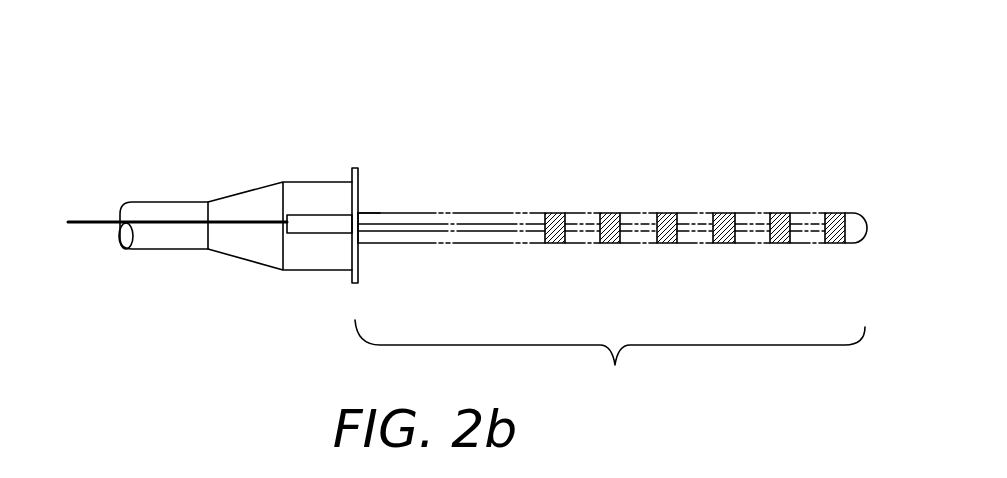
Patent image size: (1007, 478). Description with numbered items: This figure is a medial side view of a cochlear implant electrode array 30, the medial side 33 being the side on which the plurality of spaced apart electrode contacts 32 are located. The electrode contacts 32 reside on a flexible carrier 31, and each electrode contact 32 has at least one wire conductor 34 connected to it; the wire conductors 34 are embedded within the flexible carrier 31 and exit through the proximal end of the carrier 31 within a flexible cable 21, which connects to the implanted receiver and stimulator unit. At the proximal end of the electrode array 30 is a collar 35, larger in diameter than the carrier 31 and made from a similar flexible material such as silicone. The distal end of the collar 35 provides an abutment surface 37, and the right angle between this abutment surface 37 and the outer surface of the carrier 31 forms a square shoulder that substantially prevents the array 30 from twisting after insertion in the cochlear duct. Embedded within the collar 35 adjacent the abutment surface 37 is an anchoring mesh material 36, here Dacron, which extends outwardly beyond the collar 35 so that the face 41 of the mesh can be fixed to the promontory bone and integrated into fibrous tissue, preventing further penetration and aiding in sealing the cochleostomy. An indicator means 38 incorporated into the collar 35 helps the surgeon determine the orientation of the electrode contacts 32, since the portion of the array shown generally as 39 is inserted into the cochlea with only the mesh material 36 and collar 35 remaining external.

The flexible cable 21 is at (150, 201).
The electrode array 30 is at (626, 166).
The flexible carrier 31 is at (478, 243).
The electrode contact 32 is at (553, 243).
The medial side 33 is at (478, 210).
The wire conductor 34 is at (83, 221).
The collar 35 is at (298, 181).
The anchoring mesh material 36 is at (359, 167).
The abutment surface 37 is at (372, 190).
The indicator means 38 is at (320, 233).
The insertable portion of the array 39 is at (610, 360).
The face of the mesh 41 is at (362, 193).